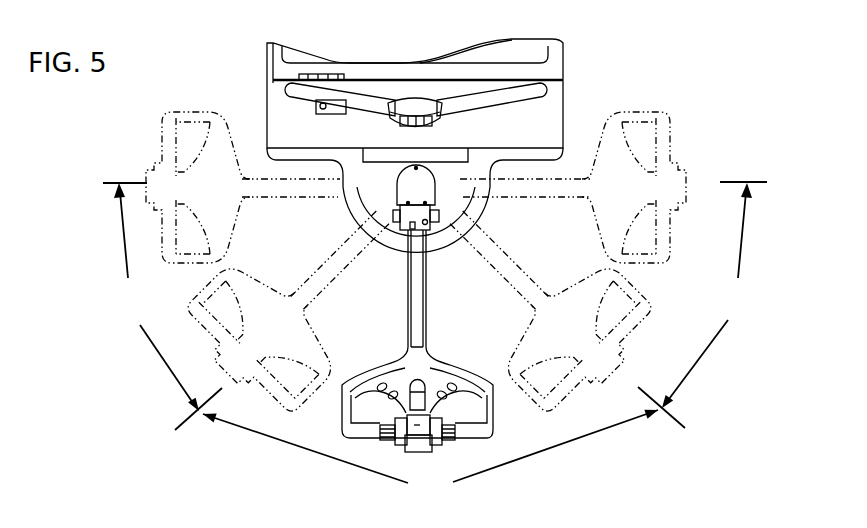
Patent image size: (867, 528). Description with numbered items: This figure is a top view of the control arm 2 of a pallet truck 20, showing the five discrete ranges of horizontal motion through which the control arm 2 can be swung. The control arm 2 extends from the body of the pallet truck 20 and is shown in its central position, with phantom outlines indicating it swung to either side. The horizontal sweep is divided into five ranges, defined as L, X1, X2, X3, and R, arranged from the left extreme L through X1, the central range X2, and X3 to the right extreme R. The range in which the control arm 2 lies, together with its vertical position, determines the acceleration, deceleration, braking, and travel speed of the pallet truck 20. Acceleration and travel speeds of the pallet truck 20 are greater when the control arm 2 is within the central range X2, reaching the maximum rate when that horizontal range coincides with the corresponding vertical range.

The pallet truck 20 is at (568, 52).
The control arm 2 is at (433, 290).
The horizontal range L is at (112, 227).
The horizontal range R is at (764, 226).
The horizontal range X1 is at (171, 363).
The horizontal range X2 is at (430, 458).
The horizontal range X3 is at (696, 361).